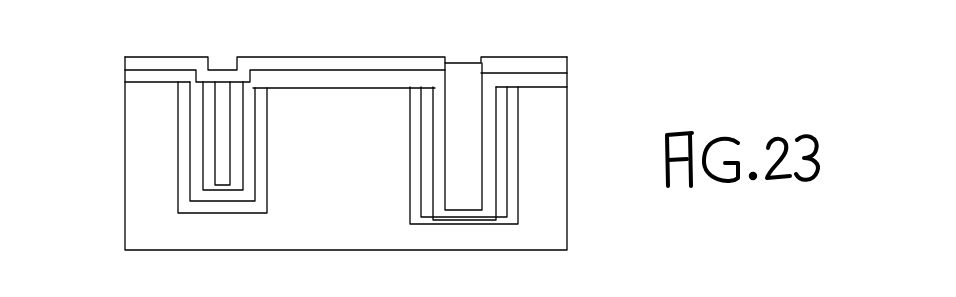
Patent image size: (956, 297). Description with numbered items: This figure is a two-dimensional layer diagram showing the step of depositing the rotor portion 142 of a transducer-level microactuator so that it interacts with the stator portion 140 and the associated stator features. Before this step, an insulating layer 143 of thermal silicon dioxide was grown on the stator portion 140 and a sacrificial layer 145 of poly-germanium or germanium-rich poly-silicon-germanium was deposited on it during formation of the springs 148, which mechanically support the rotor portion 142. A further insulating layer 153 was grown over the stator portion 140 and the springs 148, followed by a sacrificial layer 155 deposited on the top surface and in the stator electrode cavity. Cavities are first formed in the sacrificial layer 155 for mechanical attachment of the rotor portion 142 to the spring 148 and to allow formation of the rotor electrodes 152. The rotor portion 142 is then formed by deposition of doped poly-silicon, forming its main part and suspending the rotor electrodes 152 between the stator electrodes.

The stator portion 140 is at (560, 178).
The rotor portion 142 is at (135, 63).
The insulating layer 143 is at (262, 158).
The sacrificial layer 145 is at (252, 115).
The springs 148 is at (212, 148).
The rotor electrodes 152 is at (468, 200).
The insulating layer 153 is at (415, 127).
The sacrificial layer 155 is at (298, 80).